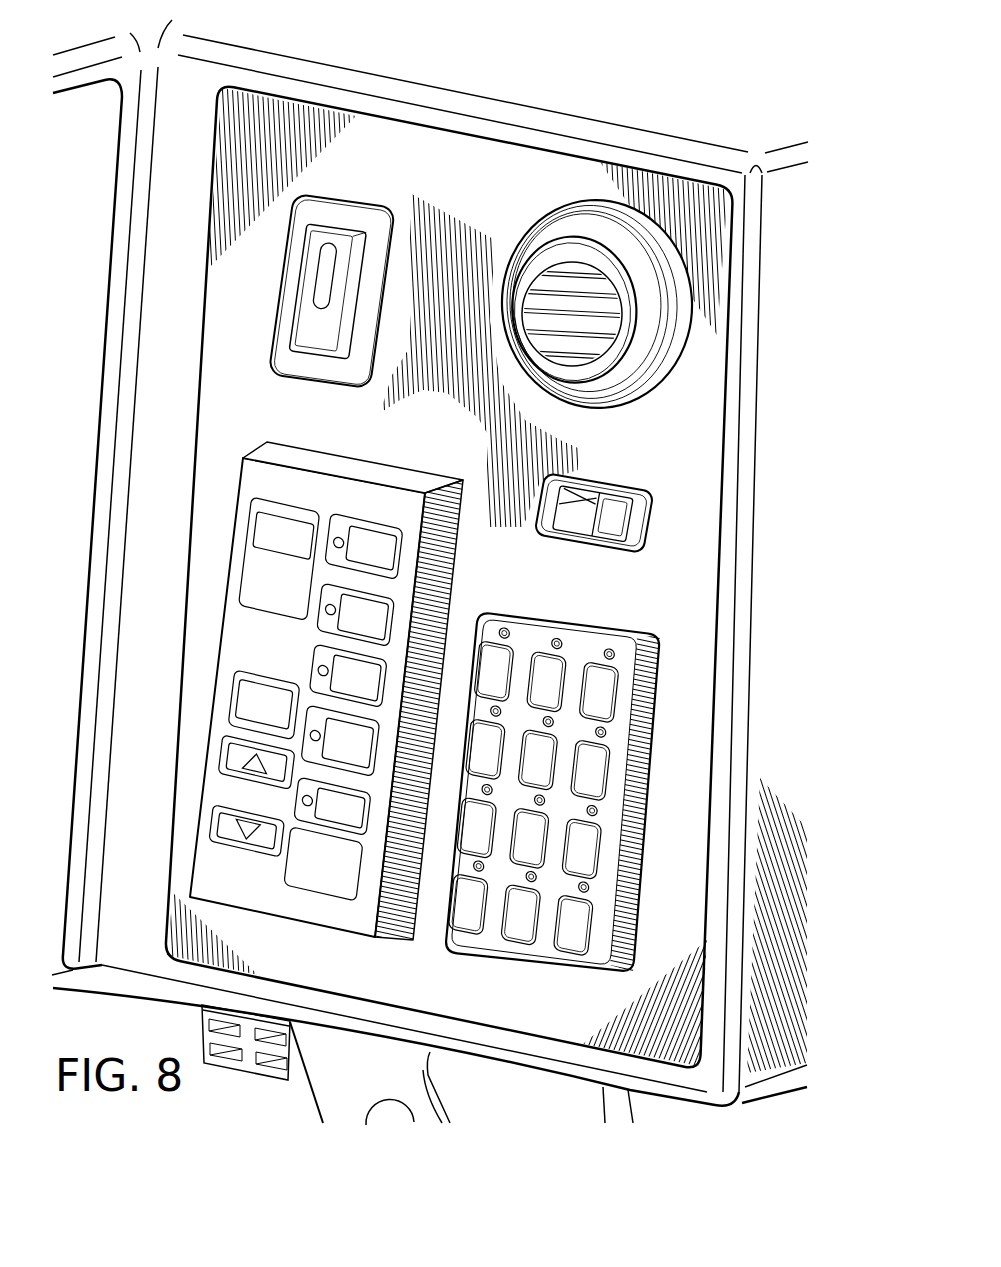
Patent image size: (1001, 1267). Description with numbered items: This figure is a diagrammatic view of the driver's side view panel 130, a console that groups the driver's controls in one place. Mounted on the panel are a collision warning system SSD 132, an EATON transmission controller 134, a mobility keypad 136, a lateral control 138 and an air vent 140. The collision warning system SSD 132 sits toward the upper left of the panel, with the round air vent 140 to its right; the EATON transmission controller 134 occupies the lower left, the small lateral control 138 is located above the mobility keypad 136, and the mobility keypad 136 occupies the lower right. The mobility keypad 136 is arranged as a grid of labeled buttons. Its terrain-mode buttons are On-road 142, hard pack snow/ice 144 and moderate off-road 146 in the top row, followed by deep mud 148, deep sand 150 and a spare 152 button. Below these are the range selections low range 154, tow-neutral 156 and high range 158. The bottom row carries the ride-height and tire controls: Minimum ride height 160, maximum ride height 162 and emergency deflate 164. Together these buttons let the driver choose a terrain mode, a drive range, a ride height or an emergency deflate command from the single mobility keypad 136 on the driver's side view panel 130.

The driver's side view panel 130 is at (551, 94).
The collision warning system SSD 132 is at (331, 207).
The EATON transmission controller 134 is at (349, 497).
The mobility keypad 136 is at (653, 647).
The lateral control 138 is at (607, 512).
The air vent 140 is at (575, 228).
The On-road 142 is at (493, 655).
The hard pack snow/ice 144 is at (543, 657).
The moderate off-road 146 is at (613, 672).
The deep mud 148 is at (487, 747).
The deep sand 150 is at (537, 782).
The spare 152 is at (603, 770).
The low range 154 is at (475, 822).
The tow-neutral 156 is at (547, 815).
The high range 158 is at (593, 867).
The Minimum ride height 160 is at (468, 922).
The maximum ride height 162 is at (522, 933).
The emergency deflate 164 is at (577, 943).